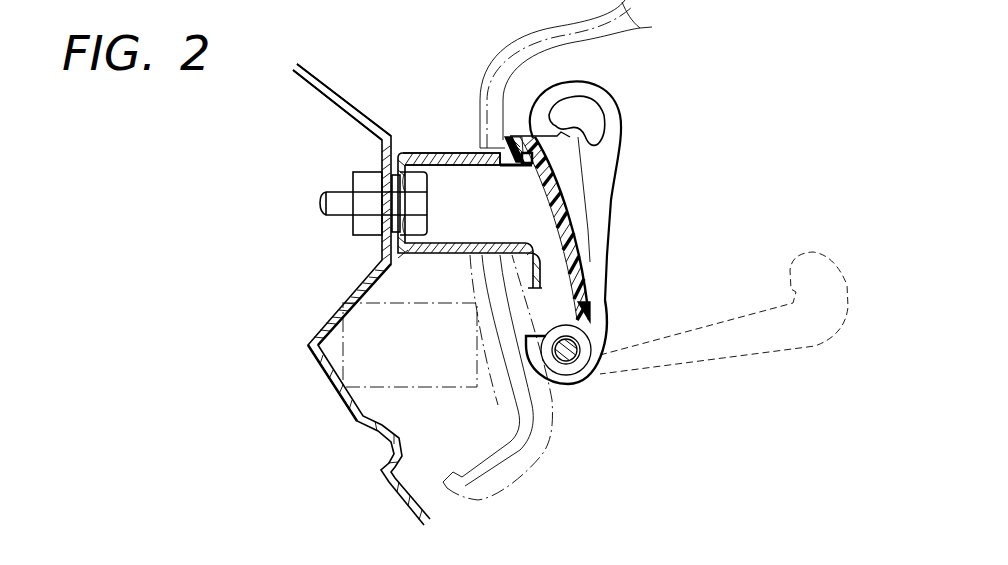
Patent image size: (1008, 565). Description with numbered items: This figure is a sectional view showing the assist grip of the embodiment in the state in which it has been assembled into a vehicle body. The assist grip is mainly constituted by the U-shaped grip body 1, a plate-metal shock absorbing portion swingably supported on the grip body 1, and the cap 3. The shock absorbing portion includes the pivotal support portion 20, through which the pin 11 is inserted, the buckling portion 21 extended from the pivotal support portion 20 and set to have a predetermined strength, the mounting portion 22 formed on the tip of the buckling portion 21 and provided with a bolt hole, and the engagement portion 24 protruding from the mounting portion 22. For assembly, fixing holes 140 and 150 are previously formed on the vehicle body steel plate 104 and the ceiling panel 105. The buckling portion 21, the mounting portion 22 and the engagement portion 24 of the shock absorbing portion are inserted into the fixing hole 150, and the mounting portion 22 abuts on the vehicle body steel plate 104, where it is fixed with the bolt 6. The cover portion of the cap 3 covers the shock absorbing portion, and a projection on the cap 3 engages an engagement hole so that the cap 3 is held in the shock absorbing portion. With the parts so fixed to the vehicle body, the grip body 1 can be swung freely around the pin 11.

The grip body 1 is at (610, 128).
The cap 3 is at (550, 188).
The bolt 6 is at (422, 203).
The pin 11 is at (570, 337).
The pivotal support portion 20 is at (553, 300).
The buckling portion 21 is at (421, 247).
The mounting portion 22 is at (413, 163).
The engagement portion 24 is at (450, 157).
The vehicle body steel plate 104 is at (328, 86).
The ceiling panel 105 is at (613, 43).
The fixing hole 140 is at (382, 193).
The fixing hole 150 is at (477, 160).